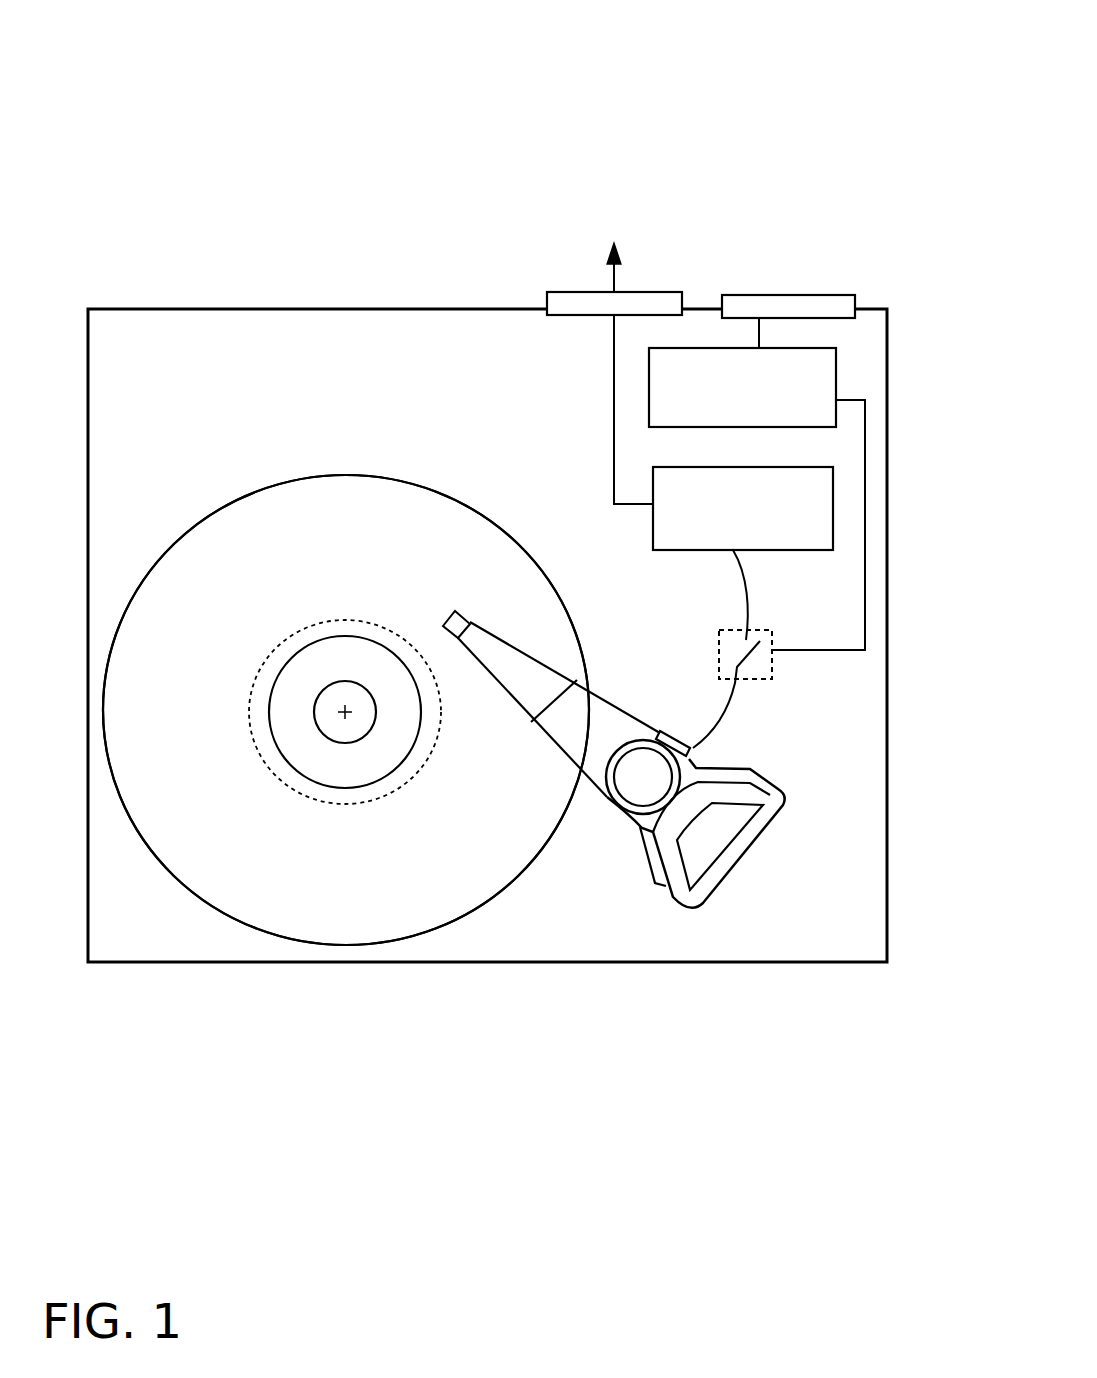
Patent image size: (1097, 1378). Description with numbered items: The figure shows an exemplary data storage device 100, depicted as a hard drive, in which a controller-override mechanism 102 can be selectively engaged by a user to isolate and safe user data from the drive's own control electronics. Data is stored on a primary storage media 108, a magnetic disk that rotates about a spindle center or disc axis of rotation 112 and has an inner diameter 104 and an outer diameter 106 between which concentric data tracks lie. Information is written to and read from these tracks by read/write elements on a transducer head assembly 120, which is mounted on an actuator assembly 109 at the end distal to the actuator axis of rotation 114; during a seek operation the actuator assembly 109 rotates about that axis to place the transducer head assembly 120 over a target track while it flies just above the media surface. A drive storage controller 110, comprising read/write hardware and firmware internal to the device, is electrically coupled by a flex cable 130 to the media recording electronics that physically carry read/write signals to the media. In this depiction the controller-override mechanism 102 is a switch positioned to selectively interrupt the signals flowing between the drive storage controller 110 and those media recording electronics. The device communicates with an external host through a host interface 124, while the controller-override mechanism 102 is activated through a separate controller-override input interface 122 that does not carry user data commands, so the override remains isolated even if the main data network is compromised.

The data storage device 100 is at (875, 97).
The controller-override mechanism 102 is at (487, 635).
The inner diameter 104 is at (365, 641).
The outer diameter 106 is at (434, 487).
The primary storage media 108 is at (346, 710).
The actuator assembly 109 is at (700, 769).
The drive storage controller 110 is at (759, 525).
The disc axis of rotation 112 is at (342, 710).
The actuator axis of rotation 114 is at (643, 778).
The transducer head assembly 120 is at (460, 615).
The controller-override input interface 122 is at (838, 305).
The host interface 124 is at (565, 303).
The flex cable 130 is at (745, 593).